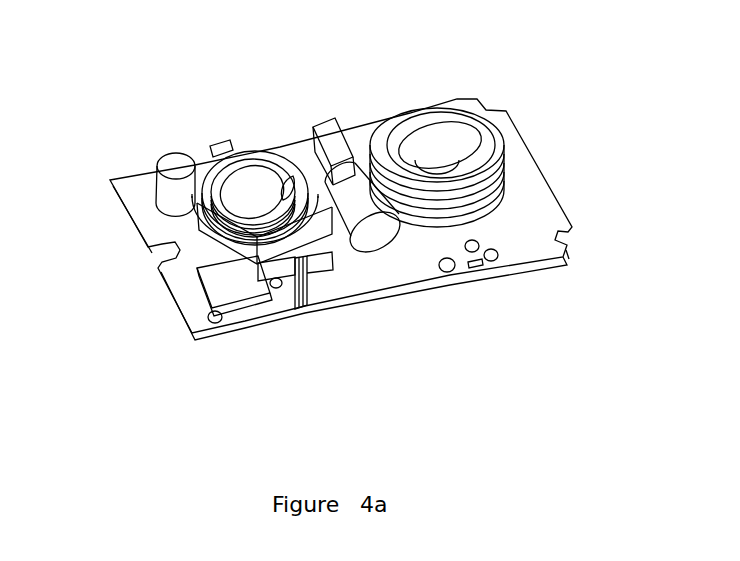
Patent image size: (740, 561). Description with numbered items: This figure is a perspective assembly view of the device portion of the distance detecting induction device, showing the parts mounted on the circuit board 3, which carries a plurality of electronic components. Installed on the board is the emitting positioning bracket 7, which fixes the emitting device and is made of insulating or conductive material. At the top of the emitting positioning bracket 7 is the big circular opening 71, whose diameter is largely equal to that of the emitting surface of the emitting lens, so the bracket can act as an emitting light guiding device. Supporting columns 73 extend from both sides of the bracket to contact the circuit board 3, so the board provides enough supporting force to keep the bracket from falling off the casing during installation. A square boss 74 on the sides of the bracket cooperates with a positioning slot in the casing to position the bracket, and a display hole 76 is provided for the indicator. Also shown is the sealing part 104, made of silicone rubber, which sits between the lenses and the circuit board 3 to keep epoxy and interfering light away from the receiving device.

The circuit board 3 is at (528, 213).
The emitting positioning bracket 7 is at (212, 204).
The big circular opening 71 is at (252, 177).
The supporting columns 73 is at (302, 313).
The square boss 74 is at (205, 288).
The display hole 76 is at (306, 170).
The sealing part 104 is at (457, 100).